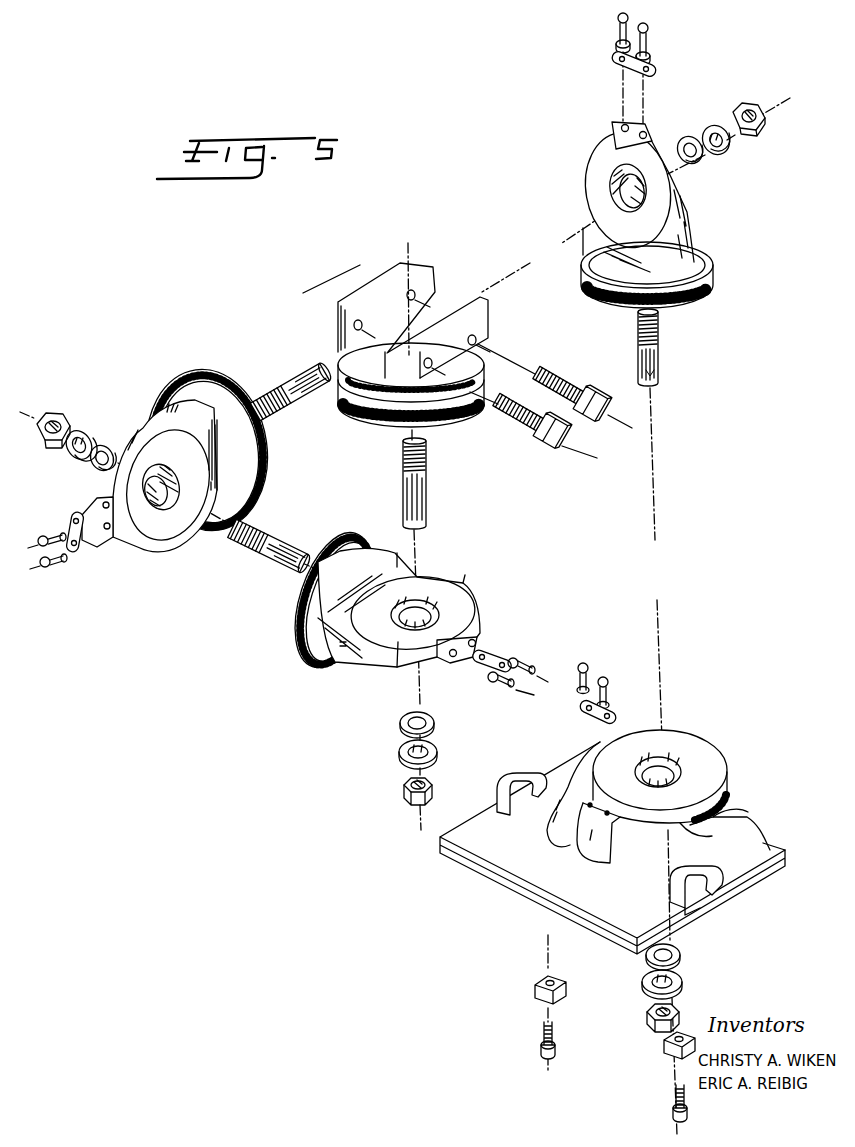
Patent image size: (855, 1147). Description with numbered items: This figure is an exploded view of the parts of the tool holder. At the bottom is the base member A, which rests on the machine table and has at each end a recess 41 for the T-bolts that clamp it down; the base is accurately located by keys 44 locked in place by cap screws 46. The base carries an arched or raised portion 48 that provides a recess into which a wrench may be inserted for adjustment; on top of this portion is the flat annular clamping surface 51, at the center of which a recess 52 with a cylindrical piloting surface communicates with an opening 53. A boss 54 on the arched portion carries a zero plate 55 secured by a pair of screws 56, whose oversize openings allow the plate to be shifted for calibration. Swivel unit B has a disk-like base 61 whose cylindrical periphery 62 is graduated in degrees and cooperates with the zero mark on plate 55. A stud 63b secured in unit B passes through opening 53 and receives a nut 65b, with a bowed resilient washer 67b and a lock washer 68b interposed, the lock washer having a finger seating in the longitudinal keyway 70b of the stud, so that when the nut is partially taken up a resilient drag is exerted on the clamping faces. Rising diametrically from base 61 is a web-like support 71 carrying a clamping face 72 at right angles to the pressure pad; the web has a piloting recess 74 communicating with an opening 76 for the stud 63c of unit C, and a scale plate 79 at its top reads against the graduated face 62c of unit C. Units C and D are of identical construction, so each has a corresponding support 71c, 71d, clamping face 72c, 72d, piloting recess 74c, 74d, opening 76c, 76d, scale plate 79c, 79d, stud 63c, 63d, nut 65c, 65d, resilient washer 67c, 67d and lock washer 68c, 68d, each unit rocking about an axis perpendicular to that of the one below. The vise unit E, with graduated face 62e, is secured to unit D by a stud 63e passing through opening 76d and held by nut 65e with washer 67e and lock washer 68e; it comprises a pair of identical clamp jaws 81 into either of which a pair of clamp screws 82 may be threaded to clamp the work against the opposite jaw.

The base member A is at (758, 816).
The swivel unit B is at (578, 138).
The swivel unit C is at (152, 414).
The swivel unit D is at (490, 617).
The vise unit E is at (455, 287).
The recess 41 is at (712, 900).
The key 44 is at (535, 977).
The cap screw 46 is at (543, 1056).
The arched or raised portion 48 is at (723, 858).
The clamping surface 51 is at (718, 754).
The recess 52 is at (674, 760).
The opening 53 is at (675, 776).
The boss 54 is at (580, 835).
The zero plate 55 is at (582, 710).
The screws 56 is at (587, 665).
The base 61 is at (605, 270).
The cylindrical periphery 62 is at (612, 300).
The cylindrical face 62c is at (190, 374).
The cylindrical face 62e is at (377, 424).
The stud 63b is at (660, 354).
The stud 63c is at (302, 410).
The stud 63d is at (280, 540).
The stud 63e is at (404, 490).
The nut 65b is at (645, 1022).
The nut 65c is at (749, 103).
The nut 65d is at (54, 411).
The nut 65e is at (404, 805).
The resilient washer 67b is at (643, 963).
The resilient washer 67c is at (689, 136).
The resilient washer 67d is at (100, 446).
The resilient washer 67e is at (434, 726).
The lock washer 68b is at (641, 988).
The lock washer 68c is at (711, 122).
The lock washer 68d is at (85, 430).
The lock washer 68e is at (440, 754).
The longitudinal keyway 70b is at (652, 374).
The web-like support 71 is at (688, 300).
The web-like support 71c is at (211, 506).
The web-like support 71d is at (326, 617).
The clamping face 72 is at (590, 166).
The clamping face 72c is at (137, 546).
The clamping face 72d is at (398, 648).
The piloting recess 74 is at (613, 190).
The piloting recess 74c is at (167, 468).
The piloting recess 74d is at (420, 600).
The opening 76 is at (637, 200).
The opening 76c is at (148, 506).
The opening 76d is at (433, 610).
The scale plate 79 is at (655, 68).
The scale plate 79c is at (80, 549).
The scale plate 79d is at (500, 648).
The clamp jaws 81 is at (388, 280).
The clamp screws 82 is at (548, 387).